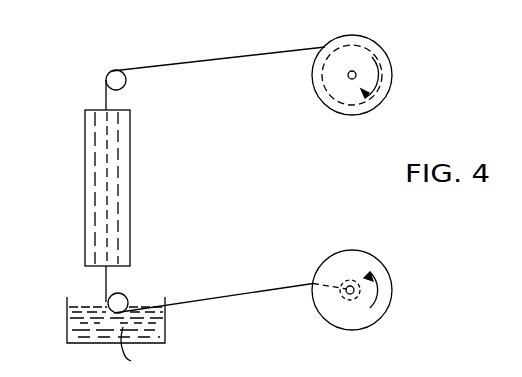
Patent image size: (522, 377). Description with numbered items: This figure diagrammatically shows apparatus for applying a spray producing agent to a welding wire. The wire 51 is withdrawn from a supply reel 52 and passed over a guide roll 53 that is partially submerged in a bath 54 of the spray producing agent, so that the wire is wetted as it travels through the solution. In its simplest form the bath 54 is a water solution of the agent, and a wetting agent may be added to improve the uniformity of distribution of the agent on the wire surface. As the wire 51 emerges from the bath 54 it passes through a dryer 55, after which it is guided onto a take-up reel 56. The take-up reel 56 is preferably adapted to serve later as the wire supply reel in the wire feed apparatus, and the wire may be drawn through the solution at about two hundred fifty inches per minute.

The wire 51 is at (267, 288).
The supply reel 52 is at (384, 275).
The guide roll 53 is at (126, 296).
The bath 54 is at (66, 311).
The dryer 55 is at (92, 191).
The take-up reel 56 is at (373, 54).